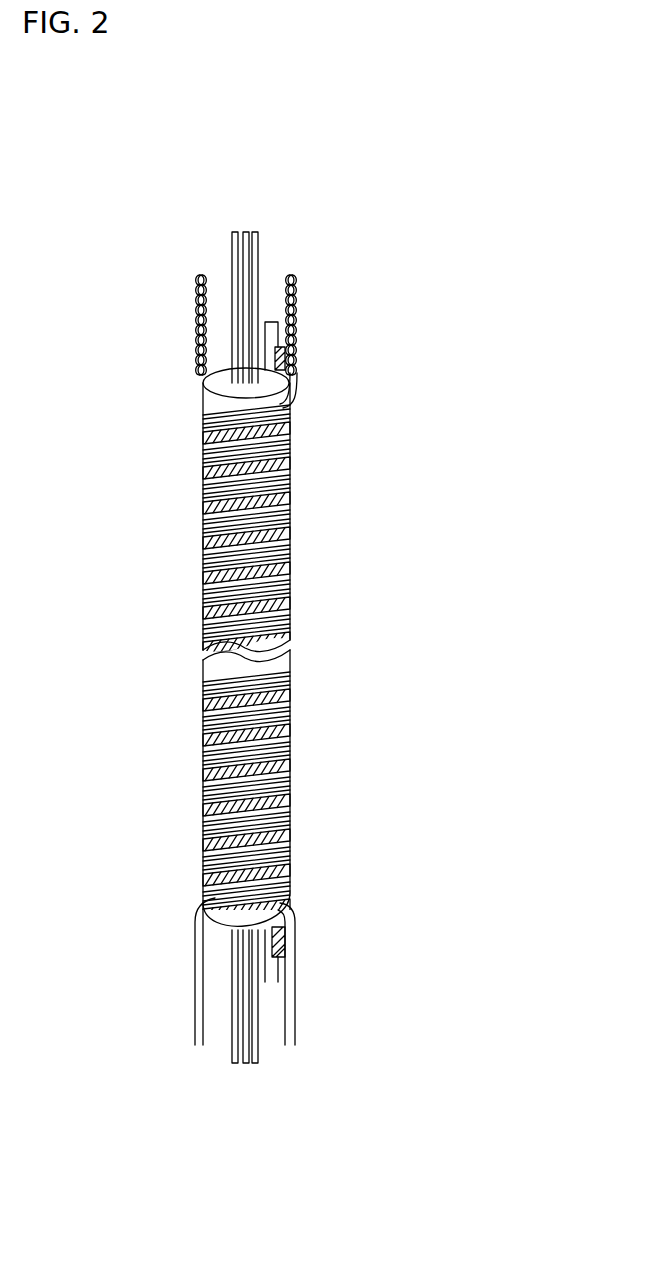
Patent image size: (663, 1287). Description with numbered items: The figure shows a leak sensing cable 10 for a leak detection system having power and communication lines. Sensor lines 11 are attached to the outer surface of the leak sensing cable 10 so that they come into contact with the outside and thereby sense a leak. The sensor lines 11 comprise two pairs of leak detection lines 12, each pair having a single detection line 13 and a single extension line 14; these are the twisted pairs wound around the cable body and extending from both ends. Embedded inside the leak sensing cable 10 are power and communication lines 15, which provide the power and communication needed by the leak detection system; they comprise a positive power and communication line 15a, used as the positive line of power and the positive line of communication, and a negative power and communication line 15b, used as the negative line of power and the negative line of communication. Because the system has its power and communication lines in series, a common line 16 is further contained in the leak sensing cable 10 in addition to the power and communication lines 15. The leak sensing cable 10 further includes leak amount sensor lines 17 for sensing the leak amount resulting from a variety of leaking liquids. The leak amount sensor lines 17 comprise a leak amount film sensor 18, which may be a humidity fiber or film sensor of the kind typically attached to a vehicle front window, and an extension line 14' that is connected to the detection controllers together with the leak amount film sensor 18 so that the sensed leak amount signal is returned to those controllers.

The leak sensing cable 10 is at (140, 636).
The sensor lines 11 is at (66, 298).
The leak detection lines 12 is at (122, 273).
The detection line 13 is at (195, 318).
The extension line 14 is at (245, 657).
The extension line 14' is at (316, 650).
The power and communication lines 15 is at (270, 160).
The positive power and communication line 15a is at (235, 232).
The negative power and communication line 15b is at (243, 232).
The common line 16 is at (258, 240).
The leak amount sensor lines 17 is at (374, 327).
The leak amount film sensor 18 is at (284, 350).